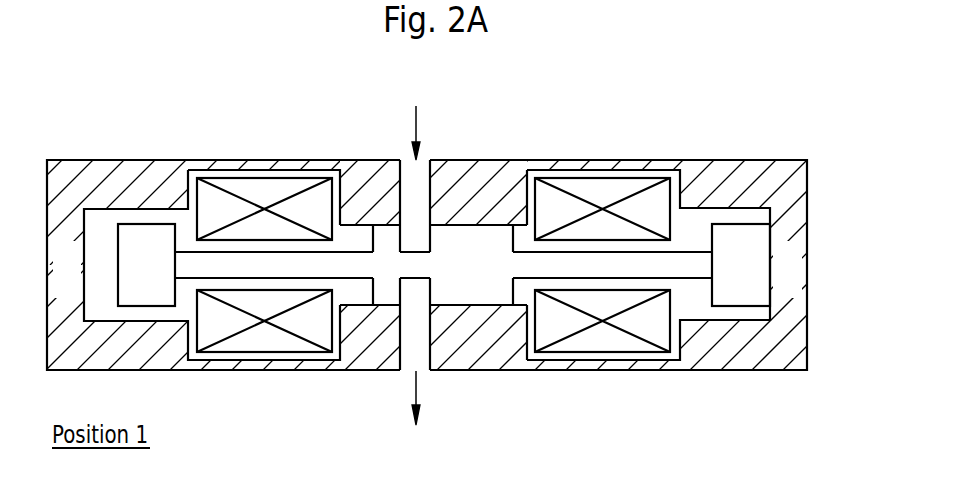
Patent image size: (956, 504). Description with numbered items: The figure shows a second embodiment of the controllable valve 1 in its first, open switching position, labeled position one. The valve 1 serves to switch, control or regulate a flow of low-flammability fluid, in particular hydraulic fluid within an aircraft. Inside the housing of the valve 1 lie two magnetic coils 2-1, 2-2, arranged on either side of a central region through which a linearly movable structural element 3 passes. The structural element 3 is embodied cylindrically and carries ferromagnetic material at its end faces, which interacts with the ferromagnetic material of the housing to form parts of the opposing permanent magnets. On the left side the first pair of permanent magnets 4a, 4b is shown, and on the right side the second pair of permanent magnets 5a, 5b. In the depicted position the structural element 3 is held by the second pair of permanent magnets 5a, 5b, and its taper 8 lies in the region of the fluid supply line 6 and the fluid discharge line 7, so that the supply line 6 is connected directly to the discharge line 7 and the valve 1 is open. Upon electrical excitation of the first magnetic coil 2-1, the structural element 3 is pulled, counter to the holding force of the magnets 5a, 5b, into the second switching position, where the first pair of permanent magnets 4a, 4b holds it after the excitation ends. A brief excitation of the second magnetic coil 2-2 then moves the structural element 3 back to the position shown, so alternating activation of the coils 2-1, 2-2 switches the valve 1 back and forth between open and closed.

The controllable valve 1 is at (781, 426).
The first magnetic coil 2-1 is at (263, 193).
The second magnetic coil 2-2 is at (604, 193).
The structural element 3 is at (460, 275).
The first permanent magnet 4a is at (80, 295).
The first permanent magnet 4b is at (156, 295).
The second permanent magnet 5a is at (734, 295).
The second permanent magnet 5b is at (774, 295).
The fluid supply line 6 is at (417, 119).
The fluid discharge line 7 is at (417, 389).
The taper 8 is at (405, 263).